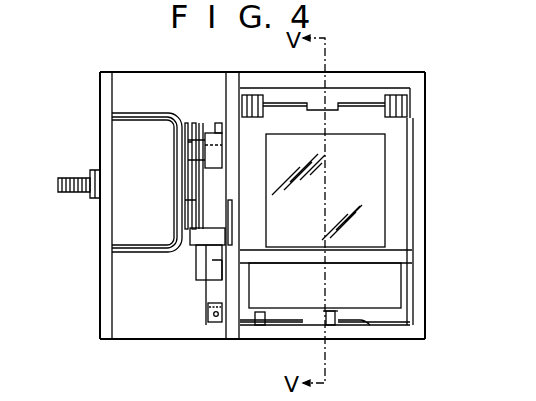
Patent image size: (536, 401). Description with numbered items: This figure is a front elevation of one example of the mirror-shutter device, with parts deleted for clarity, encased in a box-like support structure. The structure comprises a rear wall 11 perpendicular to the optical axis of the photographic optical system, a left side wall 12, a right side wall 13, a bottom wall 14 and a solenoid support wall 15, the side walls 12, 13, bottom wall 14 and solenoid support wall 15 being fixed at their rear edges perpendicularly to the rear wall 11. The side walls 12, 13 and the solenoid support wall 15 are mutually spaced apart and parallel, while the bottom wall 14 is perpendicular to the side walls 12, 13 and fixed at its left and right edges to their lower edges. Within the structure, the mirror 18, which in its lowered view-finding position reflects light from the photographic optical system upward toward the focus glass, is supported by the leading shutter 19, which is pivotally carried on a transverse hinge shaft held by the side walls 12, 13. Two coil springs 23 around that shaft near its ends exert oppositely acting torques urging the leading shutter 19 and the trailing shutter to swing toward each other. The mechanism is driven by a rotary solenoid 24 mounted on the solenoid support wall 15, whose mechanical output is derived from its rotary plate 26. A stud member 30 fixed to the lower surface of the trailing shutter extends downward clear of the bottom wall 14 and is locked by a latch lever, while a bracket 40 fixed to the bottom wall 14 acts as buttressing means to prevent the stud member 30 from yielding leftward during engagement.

The rear wall 11 is at (184, 86).
The left side wall 12 is at (426, 110).
The right side wall 13 is at (231, 339).
The bottom wall 14 is at (271, 339).
The solenoid support wall 15 is at (100, 105).
The mirror 18 is at (380, 178).
The leading shutter 19 is at (398, 244).
The coil springs 23 is at (255, 95).
The rotary solenoid 24 is at (140, 118).
The rotary plate 26 is at (205, 130).
The stud member 30 is at (331, 326).
The bracket 40 is at (360, 322).